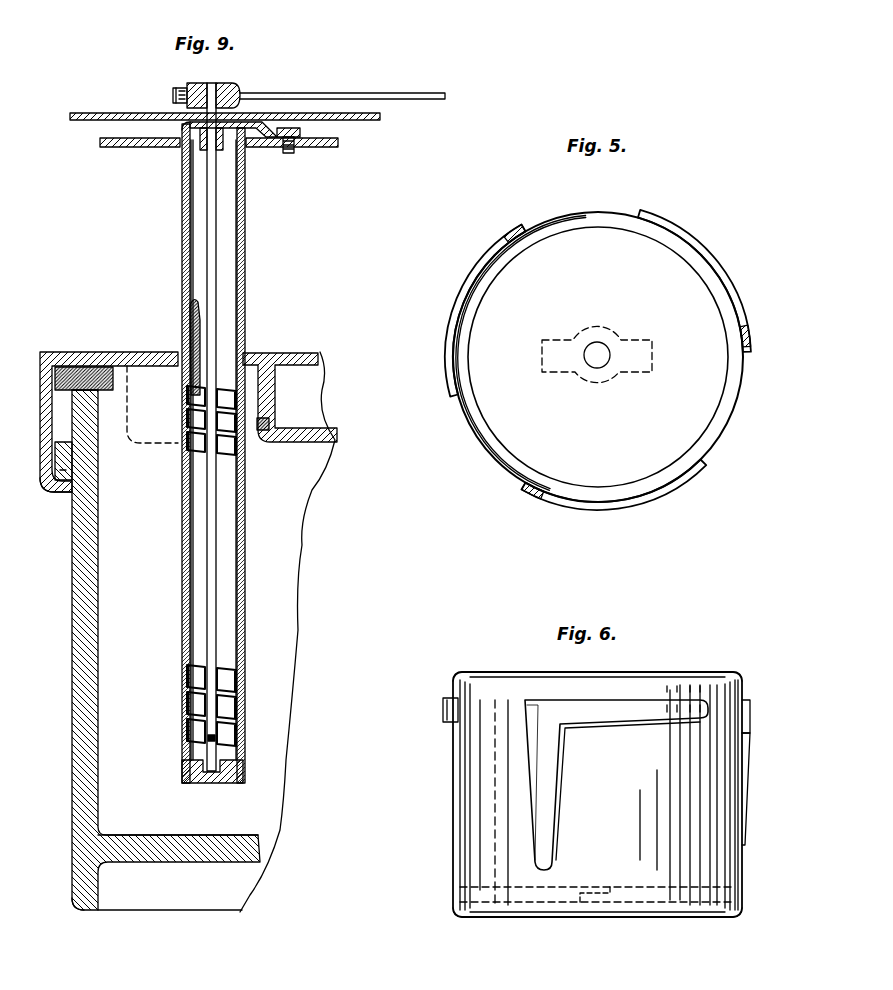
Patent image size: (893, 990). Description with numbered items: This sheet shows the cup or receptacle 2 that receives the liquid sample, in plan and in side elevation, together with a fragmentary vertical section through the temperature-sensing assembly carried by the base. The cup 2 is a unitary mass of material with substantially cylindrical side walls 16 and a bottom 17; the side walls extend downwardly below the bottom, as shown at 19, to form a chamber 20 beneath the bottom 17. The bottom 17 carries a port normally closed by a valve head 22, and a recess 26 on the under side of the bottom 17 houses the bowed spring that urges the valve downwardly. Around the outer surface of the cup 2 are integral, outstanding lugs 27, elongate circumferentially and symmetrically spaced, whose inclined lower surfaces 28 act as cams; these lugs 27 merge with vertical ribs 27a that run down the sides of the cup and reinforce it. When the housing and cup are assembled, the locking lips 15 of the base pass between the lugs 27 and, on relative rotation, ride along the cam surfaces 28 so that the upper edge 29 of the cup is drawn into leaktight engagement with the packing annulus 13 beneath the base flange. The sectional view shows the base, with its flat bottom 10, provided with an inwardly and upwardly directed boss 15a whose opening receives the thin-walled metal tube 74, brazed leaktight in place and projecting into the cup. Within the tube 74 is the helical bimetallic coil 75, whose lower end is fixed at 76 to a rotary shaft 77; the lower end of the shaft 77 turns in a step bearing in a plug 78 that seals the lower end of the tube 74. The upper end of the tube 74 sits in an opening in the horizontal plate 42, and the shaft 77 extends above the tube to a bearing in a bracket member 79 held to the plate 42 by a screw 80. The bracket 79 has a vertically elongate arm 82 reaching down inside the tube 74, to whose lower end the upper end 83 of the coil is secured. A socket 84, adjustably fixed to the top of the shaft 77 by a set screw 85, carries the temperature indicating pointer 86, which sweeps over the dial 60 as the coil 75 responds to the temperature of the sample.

In FIG. 5, the cup or receptacle 2 is at (740, 450).
In FIG. 6, the cup or receptacle 2 is at (440, 798).
In FIG. 9, the flat bottom 10 is at (318, 447).
In FIG. 9, the annulus of packing material 13 is at (88, 376).
In FIG. 9, the locking lips 15 is at (66, 495).
In FIG. 9, the boss 15a is at (272, 377).
In FIG. 5, the side walls 16 is at (730, 400).
In FIG. 6, the side walls 16 is at (458, 828).
In FIG. 9, the bottom 17 is at (150, 845).
In FIG. 6, the bottom 17 is at (663, 900).
In FIG. 9, the downward extension of side walls 19 is at (80, 884).
In FIG. 6, the downward extension of side walls 19 is at (460, 904).
In FIG. 9, the chamber 20 is at (158, 896).
In FIG. 5, the valve head 22 is at (592, 344).
In FIG. 6, the valve head 22 is at (602, 887).
In FIG. 5, the recess 26 is at (640, 345).
In FIG. 6, the recess 26 is at (553, 903).
In FIG. 9, the lugs 27 is at (41, 487).
In FIG. 5, the lugs 27 is at (710, 258).
In FIG. 6, the lugs 27 is at (612, 703).
In FIG. 5, the vertical ribs 27a is at (752, 340).
In FIG. 6, the vertical ribs 27a is at (750, 770).
In FIG. 6, the inclined lower surfaces 28 is at (752, 728).
In FIG. 9, the upper edge 29 is at (87, 395).
In FIG. 6, the upper edge 29 is at (735, 672).
In FIG. 9, the horizontal plate 42 is at (312, 148).
In FIG. 9, the dial 60 is at (376, 120).
In FIG. 9, the thin-walled metal tube 74 is at (245, 522).
In FIG. 9, the helical bimetallic coil 75 is at (188, 683).
In FIG. 9, the fixing point of coil lower end 76 is at (218, 740).
In FIG. 9, the rotary shaft 77 is at (208, 632).
In FIG. 9, the plug 78 is at (217, 781).
In FIG. 9, the bracket member 79 is at (247, 124).
In FIG. 9, the screw 80 is at (300, 128).
In FIG. 9, the vertically elongate arm 82 is at (192, 320).
In FIG. 9, the upper end of bimetallic coil 83 is at (186, 392).
In FIG. 9, the socket 84 is at (224, 86).
In FIG. 9, the set screw 85 is at (182, 90).
In FIG. 9, the temperature indicating pointer 86 is at (382, 93).